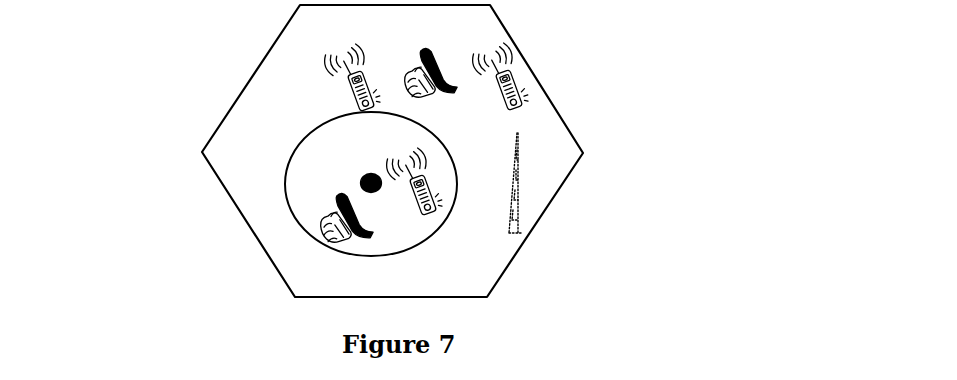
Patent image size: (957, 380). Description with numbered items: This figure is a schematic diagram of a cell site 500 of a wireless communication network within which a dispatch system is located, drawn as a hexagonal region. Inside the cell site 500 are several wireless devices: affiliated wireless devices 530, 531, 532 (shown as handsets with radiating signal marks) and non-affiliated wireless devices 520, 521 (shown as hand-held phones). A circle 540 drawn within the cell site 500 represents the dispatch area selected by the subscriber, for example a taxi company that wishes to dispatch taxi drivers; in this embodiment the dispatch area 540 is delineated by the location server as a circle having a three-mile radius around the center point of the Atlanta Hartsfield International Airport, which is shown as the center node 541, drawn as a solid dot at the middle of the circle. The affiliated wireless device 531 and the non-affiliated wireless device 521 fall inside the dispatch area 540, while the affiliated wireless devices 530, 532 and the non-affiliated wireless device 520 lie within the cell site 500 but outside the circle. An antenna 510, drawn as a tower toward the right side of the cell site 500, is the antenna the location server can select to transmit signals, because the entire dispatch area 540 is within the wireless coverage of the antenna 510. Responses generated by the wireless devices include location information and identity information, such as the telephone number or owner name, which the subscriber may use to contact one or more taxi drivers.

The cell site 500 is at (543, 80).
The antenna 510 is at (511, 232).
The non-affiliated wireless device 520 is at (427, 50).
The non-affiliated wireless device 521 is at (355, 193).
The affiliated wireless device 530 is at (351, 48).
The affiliated wireless device 531 is at (413, 152).
The affiliated wireless device 532 is at (499, 47).
The dispatch area 540 is at (283, 182).
The center node 541 is at (363, 176).